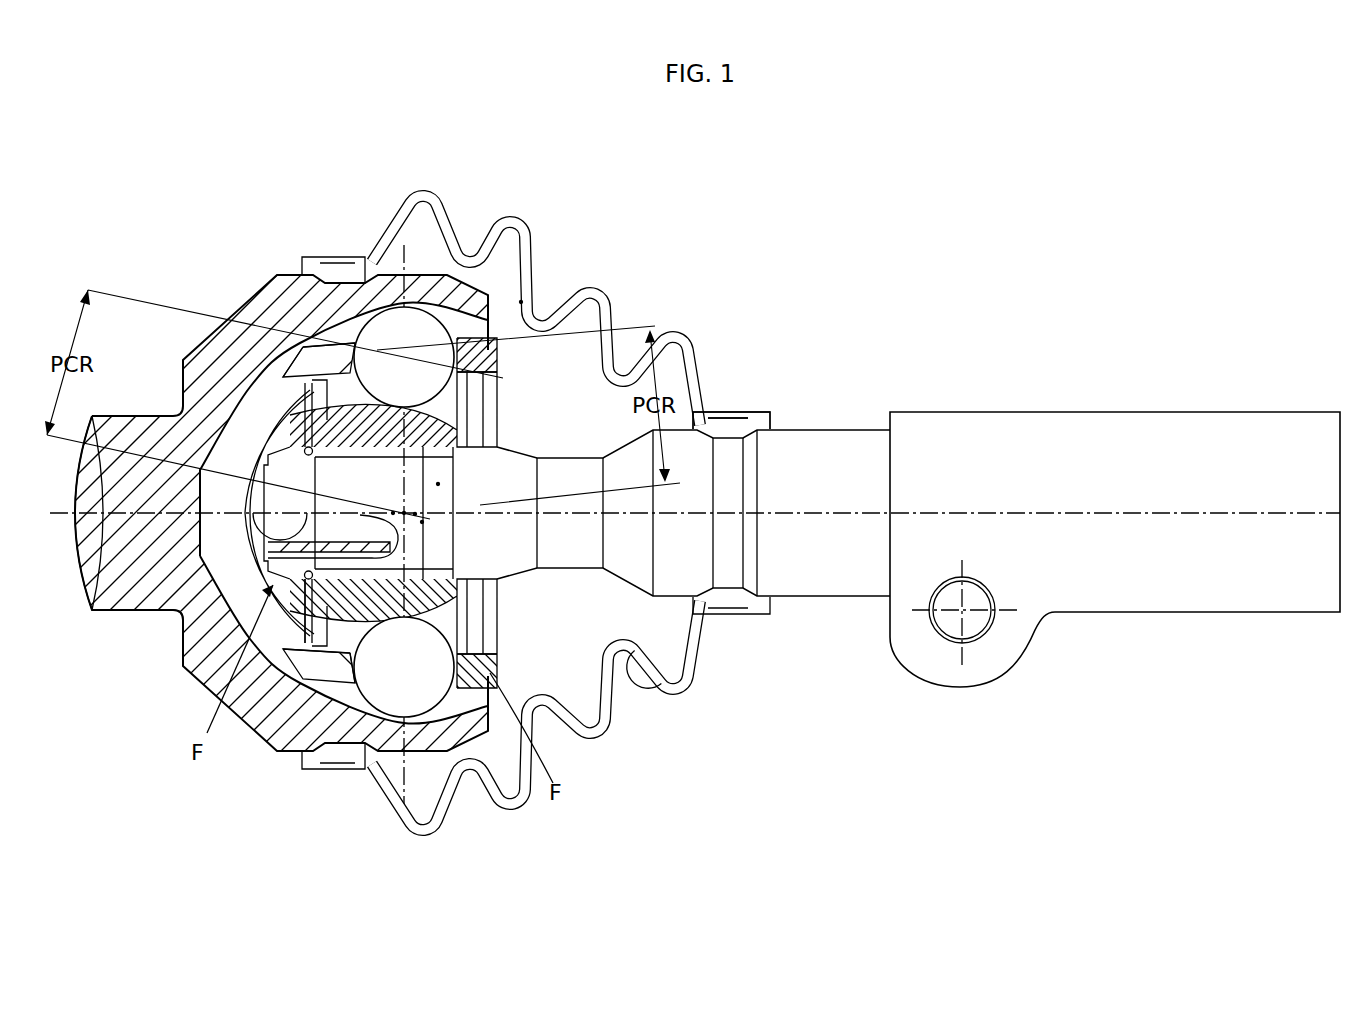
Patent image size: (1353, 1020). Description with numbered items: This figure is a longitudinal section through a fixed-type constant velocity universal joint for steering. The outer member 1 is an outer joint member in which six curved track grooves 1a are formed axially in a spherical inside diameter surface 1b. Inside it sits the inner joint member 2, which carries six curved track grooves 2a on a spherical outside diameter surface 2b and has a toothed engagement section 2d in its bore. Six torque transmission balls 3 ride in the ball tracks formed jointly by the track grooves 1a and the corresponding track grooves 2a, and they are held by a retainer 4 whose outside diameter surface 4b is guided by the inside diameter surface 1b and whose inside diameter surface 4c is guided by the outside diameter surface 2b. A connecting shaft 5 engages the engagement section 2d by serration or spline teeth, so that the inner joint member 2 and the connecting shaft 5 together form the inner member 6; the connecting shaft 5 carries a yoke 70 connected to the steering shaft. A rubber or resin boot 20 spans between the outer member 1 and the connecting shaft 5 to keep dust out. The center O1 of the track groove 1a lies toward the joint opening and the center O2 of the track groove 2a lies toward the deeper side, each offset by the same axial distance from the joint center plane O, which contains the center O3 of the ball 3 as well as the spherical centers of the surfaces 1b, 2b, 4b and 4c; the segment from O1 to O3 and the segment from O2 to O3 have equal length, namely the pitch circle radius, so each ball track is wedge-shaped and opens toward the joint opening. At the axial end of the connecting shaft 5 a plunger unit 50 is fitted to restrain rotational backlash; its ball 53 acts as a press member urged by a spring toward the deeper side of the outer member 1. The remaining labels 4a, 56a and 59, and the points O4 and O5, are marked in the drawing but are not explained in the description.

The outer member 1 is at (237, 303).
The track grooves 1a is at (318, 740).
The spherical inside diameter surface 1b is at (353, 335).
The inner joint member 2 is at (442, 421).
The track grooves 2a is at (495, 613).
The spherical outside diameter surface 2b is at (322, 345).
The engagement section 2d is at (480, 417).
The torque transmission balls 3 is at (420, 327).
The retainer 4 is at (317, 343).
The cage outer spherical surface 4a is at (445, 700).
The outside diameter surface 4b is at (312, 665).
The inside diameter surface 4c is at (355, 735).
The connecting shaft 5 is at (704, 422).
The inner member 6 is at (540, 605).
The boot 20 is at (648, 685).
The plunger unit 50 is at (187, 660).
The ball 53 is at (130, 610).
The cap 56a is at (290, 403).
The retainer 59 is at (305, 345).
The yoke 70 is at (1062, 616).
The joint center plane O is at (440, 483).
The center of the track groove of the outer member O1 is at (417, 515).
The center of the track groove of the inner joint member O2 is at (392, 513).
The center of the ball O3 is at (523, 300).
The center of cage outer spherical surface O4 is at (403, 513).
The center of cage inner spherical surface O5 is at (423, 525).